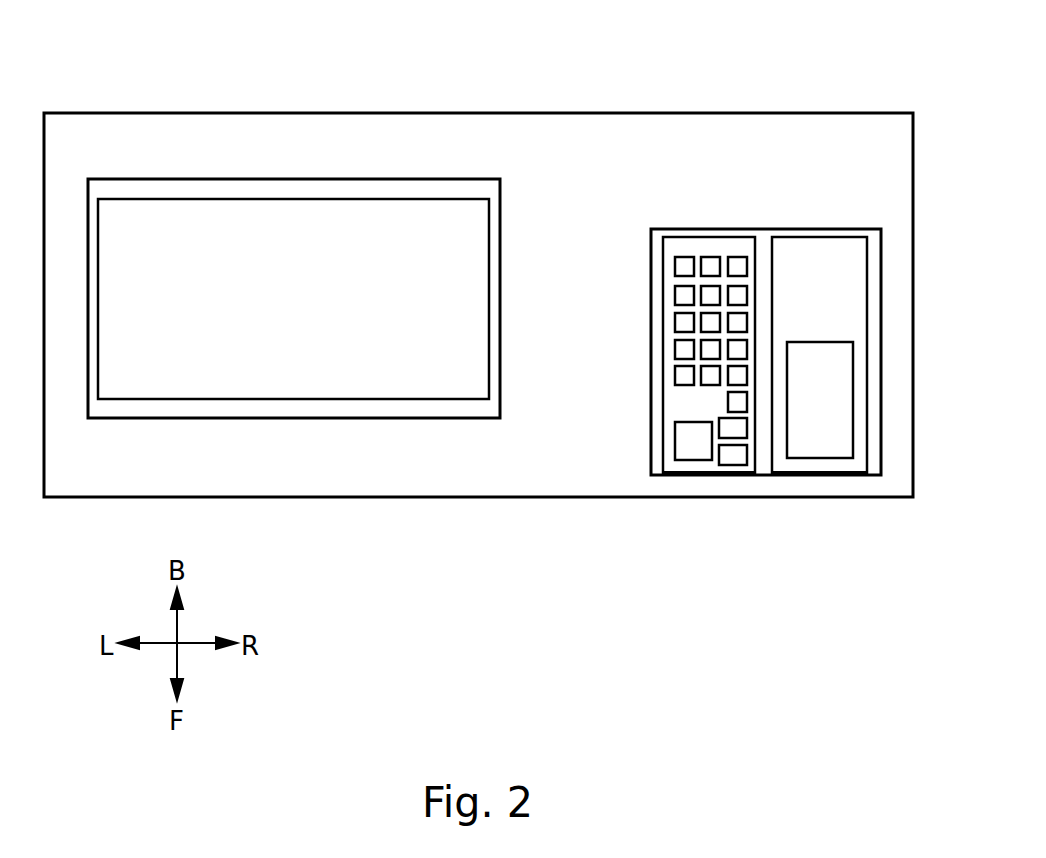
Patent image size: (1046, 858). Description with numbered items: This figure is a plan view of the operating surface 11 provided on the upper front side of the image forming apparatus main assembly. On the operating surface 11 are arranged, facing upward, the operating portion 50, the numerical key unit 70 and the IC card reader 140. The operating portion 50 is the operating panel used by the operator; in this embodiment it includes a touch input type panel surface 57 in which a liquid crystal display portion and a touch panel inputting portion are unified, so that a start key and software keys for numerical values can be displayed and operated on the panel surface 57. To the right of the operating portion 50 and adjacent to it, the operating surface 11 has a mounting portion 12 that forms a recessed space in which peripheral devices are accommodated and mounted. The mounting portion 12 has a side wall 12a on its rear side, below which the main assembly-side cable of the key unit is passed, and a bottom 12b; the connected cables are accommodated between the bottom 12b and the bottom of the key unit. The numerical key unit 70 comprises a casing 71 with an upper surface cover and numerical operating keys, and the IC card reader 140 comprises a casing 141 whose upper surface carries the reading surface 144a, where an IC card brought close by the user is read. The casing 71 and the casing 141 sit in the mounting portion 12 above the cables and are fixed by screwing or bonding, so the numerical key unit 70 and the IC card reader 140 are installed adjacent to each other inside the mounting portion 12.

The operating surface 11 is at (583, 128).
The operating portion 50 is at (268, 133).
The panel surface 57 is at (290, 382).
The mounting portion 12 is at (873, 252).
The side wall 12a is at (762, 235).
The bottom 12b is at (657, 248).
The numerical key unit 70 is at (702, 536).
The casing 71 is at (665, 406).
The IC card reader 140 is at (812, 536).
The casing 141 is at (863, 316).
The reading surface 144a is at (838, 440).